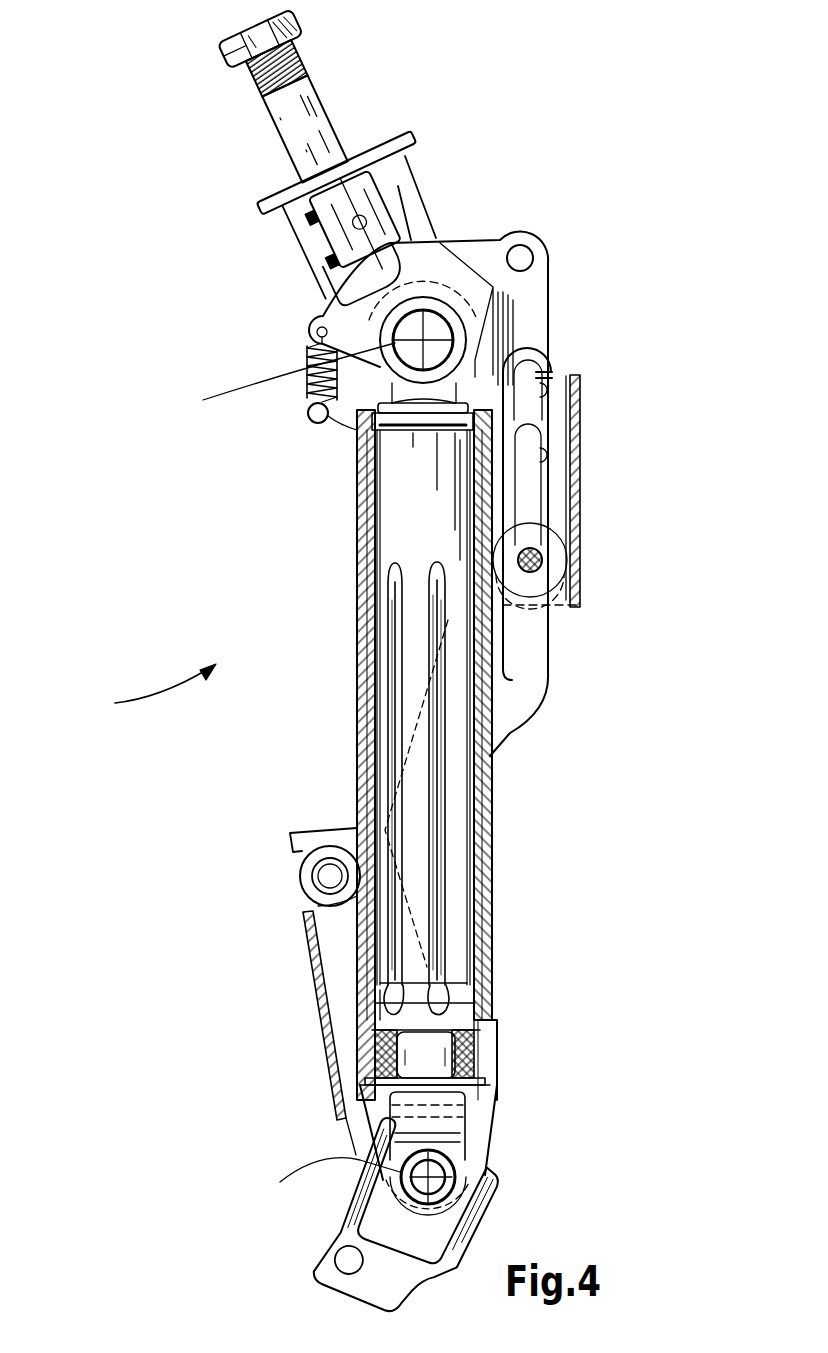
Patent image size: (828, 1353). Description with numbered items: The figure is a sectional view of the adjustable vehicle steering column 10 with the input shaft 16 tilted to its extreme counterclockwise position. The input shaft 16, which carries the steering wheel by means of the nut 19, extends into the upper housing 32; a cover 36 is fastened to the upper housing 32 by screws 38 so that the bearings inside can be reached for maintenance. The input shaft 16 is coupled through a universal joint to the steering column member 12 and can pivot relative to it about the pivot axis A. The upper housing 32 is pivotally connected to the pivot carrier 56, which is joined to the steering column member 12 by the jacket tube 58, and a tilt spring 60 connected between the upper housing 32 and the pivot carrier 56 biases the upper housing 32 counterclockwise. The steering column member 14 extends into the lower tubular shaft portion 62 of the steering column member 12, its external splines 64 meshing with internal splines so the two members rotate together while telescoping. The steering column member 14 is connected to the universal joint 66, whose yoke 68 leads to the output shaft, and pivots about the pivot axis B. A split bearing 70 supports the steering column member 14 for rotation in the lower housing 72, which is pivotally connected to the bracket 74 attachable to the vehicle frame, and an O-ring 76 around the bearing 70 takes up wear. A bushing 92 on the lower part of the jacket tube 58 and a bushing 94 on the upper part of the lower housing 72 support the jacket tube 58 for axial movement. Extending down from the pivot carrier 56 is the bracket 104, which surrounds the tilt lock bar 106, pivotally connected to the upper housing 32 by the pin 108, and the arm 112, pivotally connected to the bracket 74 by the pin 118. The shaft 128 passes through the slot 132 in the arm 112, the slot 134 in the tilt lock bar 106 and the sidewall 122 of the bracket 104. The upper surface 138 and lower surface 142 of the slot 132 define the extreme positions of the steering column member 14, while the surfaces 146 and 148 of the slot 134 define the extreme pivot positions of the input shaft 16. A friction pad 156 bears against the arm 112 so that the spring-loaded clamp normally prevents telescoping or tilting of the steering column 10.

The vehicle steering column 10 is at (149, 690).
The steering column member 12 is at (410, 532).
The steering column member 14 is at (456, 1002).
The input shaft 16 is at (292, 124).
The nut 19 is at (240, 60).
The upper housing 32 is at (327, 287).
The cover 36 is at (312, 250).
The screws 38 is at (306, 222).
The pivot carrier 56 is at (340, 424).
The jacket tube 58 is at (360, 628).
The tilt spring 60 is at (315, 378).
The lower tubular shaft portion 62 is at (415, 712).
The external splines 64 is at (415, 1140).
The universal joint 66 is at (455, 1183).
The yoke 68 is at (453, 1248).
The split bearing 70 is at (488, 1037).
The lower housing 72 is at (493, 920).
The bracket 74 is at (316, 1046).
The O-ring 76 is at (490, 1057).
The bushing 92 is at (372, 990).
The bushing 94 is at (380, 408).
The bracket 104 is at (580, 380).
The tilt lock bar 106 is at (540, 300).
The pin 108 is at (524, 262).
The arm 112 is at (350, 837).
The pin 118 is at (330, 877).
The sidewall 122 is at (565, 496).
The shaft 128 is at (530, 590).
The slot 132 is at (578, 410).
The slot 134 is at (546, 468).
The upper surface 138 is at (546, 360).
The lower surface 142 is at (545, 558).
The surface 146 is at (546, 448).
The surface 148 is at (554, 541).
The friction pad 156 is at (560, 580).
The pivot axis A is at (289, 380).
The pivot axis B is at (329, 1180).